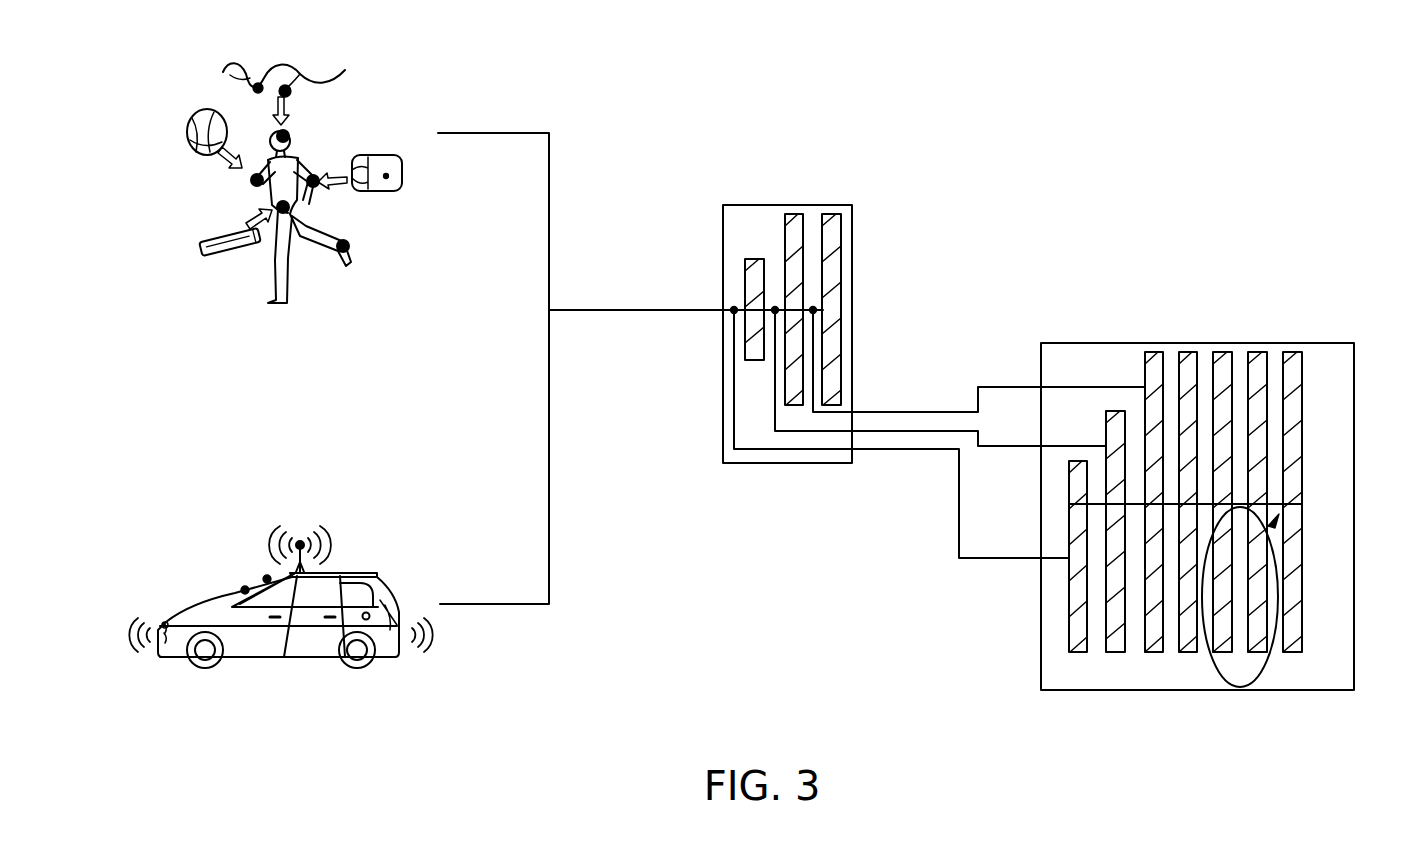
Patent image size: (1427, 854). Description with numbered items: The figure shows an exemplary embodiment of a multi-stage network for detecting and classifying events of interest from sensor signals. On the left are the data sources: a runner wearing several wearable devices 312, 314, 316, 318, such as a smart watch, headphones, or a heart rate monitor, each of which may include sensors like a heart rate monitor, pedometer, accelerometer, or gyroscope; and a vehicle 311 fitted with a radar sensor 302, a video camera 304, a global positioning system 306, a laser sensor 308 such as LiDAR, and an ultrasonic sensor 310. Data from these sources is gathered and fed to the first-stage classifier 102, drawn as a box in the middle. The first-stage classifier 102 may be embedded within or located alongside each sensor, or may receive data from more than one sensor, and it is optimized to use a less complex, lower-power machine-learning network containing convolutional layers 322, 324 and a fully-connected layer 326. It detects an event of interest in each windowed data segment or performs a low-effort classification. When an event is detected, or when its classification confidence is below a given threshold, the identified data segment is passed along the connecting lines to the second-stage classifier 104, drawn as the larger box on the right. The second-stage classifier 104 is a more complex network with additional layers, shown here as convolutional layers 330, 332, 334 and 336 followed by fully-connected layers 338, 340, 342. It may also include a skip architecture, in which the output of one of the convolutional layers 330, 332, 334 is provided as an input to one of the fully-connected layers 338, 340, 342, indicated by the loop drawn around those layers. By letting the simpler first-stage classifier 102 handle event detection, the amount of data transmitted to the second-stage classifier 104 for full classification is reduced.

The Stage 1 Classifier 102 is at (852, 303).
The Stage 2 Classifier 104 is at (1355, 432).
The radar sensor 302 is at (167, 623).
The video camera 304 is at (243, 589).
The global positioning system 306 is at (267, 576).
The laser sensor 308 is at (313, 517).
The ultrasonic sensor 310 is at (367, 633).
The vehicle 311 is at (278, 636).
The wearable device 312 is at (191, 112).
The wearable device 314 is at (335, 72).
The wearable device 316 is at (393, 153).
The wearable device 318 is at (212, 232).
The convolutional layer 322 is at (745, 268).
The convolutional layer 324 is at (793, 214).
The fully-connected layer 326 is at (841, 245).
The convolutional layer 330 is at (1069, 636).
The convolutional layer 332 is at (1114, 652).
The convolutional layer 334 is at (1153, 652).
The layer 336 is at (1190, 652).
The fully-connected layer 338 is at (1222, 352).
The fully-connected layer 340 is at (1257, 352).
The fully-connected layer 342 is at (1292, 352).